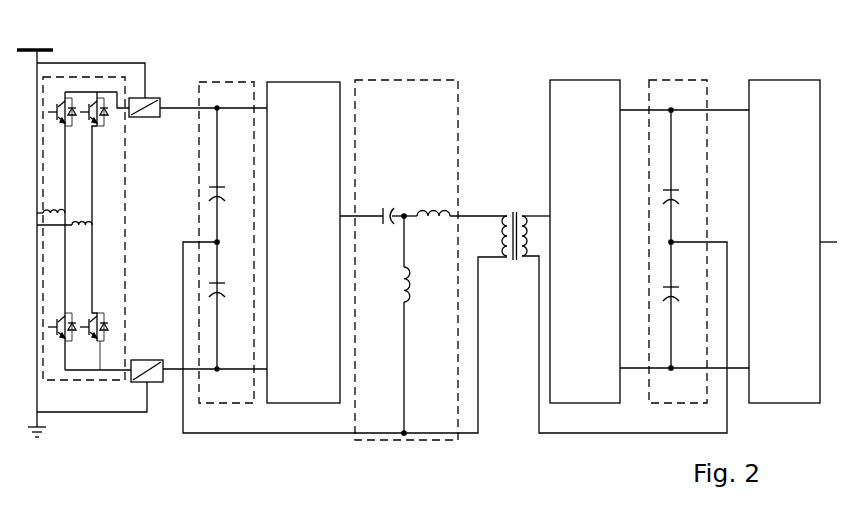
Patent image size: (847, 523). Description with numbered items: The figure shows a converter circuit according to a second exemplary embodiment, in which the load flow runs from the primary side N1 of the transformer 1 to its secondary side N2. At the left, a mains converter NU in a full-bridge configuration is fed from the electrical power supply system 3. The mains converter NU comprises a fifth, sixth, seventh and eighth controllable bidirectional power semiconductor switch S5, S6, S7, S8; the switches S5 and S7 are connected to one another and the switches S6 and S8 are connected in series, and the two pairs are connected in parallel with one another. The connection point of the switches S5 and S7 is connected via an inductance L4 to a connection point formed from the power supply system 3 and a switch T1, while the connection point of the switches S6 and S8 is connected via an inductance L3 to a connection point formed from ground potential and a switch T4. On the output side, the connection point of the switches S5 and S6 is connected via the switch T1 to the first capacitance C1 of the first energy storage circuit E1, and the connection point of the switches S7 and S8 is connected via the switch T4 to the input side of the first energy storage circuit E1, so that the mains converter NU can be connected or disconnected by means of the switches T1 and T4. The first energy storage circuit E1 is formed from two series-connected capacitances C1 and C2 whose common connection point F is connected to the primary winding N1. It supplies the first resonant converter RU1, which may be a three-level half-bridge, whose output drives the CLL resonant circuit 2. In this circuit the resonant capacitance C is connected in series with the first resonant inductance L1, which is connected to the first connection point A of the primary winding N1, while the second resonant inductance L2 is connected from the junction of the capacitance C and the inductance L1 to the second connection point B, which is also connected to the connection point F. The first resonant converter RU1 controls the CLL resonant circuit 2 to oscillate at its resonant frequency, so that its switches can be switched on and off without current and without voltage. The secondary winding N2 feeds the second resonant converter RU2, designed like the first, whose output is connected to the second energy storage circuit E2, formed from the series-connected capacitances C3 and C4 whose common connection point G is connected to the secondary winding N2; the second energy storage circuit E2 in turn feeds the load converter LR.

The transformer 1 is at (503, 145).
The CLL resonant circuit 2 is at (395, 80).
The electrical power supply system 3 is at (35, 38).
The mains converter NU is at (98, 77).
The first energy storage circuit E1 is at (223, 82).
The second energy storage circuit E2 is at (685, 80).
The switch T1 is at (156, 94).
The switch T4 is at (114, 360).
The fifth controllable bidirectional power semiconductor switch S5 is at (42, 152).
The sixth controllable bidirectional power semiconductor switch S6 is at (101, 158).
The seventh controllable bidirectional power semiconductor switch S7 is at (42, 291).
The eighth controllable bidirectional power semiconductor switch S8 is at (101, 297).
The first resonant inductance L1 is at (429, 201).
The second resonant inductance L2 is at (420, 324).
The inductance L3 is at (95, 226).
The inductance L4 is at (39, 214).
The resonant capacitance C is at (389, 228).
The first capacitance C1 is at (227, 183).
The second capacitance C2 is at (227, 300).
The third capacitance C3 is at (682, 186).
The fourth capacitance C4 is at (682, 303).
The common connection point F is at (345, 326).
The common connection point G is at (680, 232).
The first connection point A is at (478, 201).
The second connection point B is at (415, 422).
The primary winding N1 is at (504, 249).
The secondary winding N2 is at (534, 224).
The first resonant converter RU1 is at (303, 242).
The second resonant converter RU2 is at (585, 241).
The load converter LR is at (793, 241).